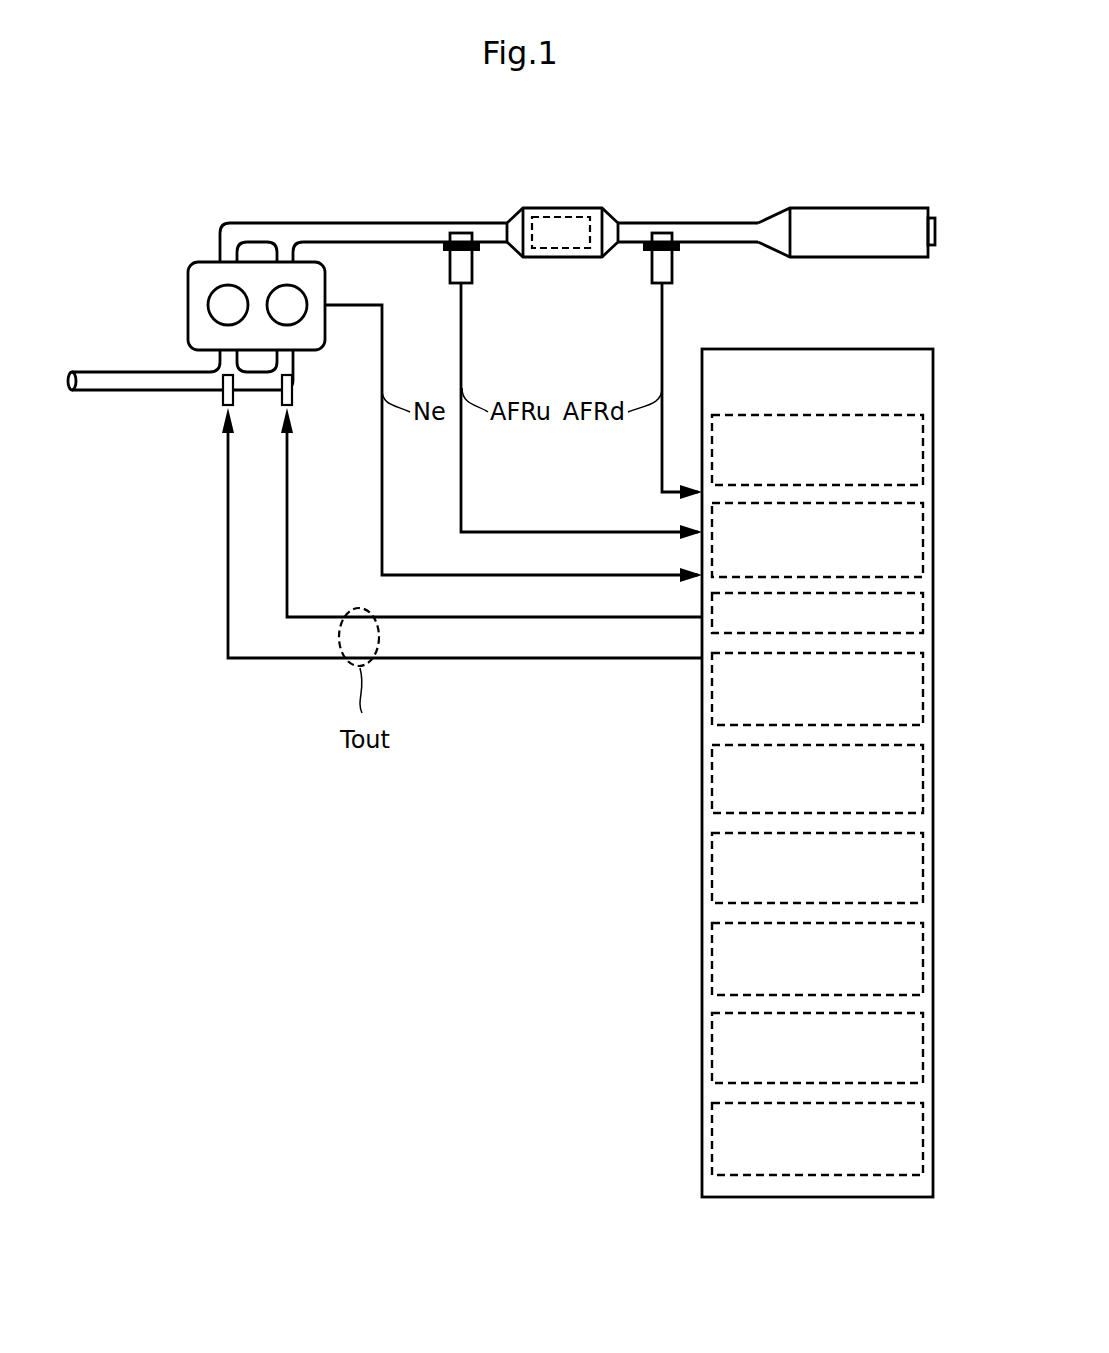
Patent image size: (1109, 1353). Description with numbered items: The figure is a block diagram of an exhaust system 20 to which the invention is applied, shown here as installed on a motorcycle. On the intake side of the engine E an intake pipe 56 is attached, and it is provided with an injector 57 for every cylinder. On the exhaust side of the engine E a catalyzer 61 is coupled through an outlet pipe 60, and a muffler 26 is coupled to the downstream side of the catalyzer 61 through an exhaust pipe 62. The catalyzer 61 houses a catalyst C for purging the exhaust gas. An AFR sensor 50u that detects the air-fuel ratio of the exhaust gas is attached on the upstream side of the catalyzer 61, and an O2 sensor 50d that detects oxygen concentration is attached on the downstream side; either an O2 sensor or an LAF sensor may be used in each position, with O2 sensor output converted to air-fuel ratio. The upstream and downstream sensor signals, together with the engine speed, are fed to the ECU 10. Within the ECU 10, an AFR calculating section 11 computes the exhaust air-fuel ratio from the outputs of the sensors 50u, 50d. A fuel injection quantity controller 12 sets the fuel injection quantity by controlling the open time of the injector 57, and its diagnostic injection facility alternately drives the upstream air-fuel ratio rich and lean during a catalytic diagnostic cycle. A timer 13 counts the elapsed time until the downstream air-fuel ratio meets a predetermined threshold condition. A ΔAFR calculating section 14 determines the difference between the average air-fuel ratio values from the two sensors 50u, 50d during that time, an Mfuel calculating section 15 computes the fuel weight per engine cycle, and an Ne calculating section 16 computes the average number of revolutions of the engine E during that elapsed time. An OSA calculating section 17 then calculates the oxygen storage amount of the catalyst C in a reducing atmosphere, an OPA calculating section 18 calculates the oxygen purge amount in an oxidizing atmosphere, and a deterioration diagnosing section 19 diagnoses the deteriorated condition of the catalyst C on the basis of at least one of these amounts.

The engine E is at (184, 281).
The ECU 10 is at (897, 349).
The AFR calculating section 11 is at (923, 450).
The fuel injection quantity controller 12 is at (923, 537).
The timer 13 is at (923, 613).
The ΔAFR calculating section 14 is at (923, 687).
The Mfuel calculating section 15 is at (923, 775).
The Ne calculating section 16 is at (923, 867).
The OSA calculating section 17 is at (923, 962).
The OPA calculating section 18 is at (923, 1052).
The deterioration diagnosing section 19 is at (923, 1137).
The exhaust system 20 is at (486, 191).
The muffler 26 is at (860, 218).
The AFR sensor 50u is at (455, 268).
The O2 sensor 50d is at (657, 268).
The intake pipe 56 is at (143, 380).
The injector 57 is at (222, 395).
The outlet pipe 60 is at (383, 222).
The catalyzer 61 is at (562, 188).
The exhaust pipe 62 is at (700, 235).
The catalyst C is at (587, 215).